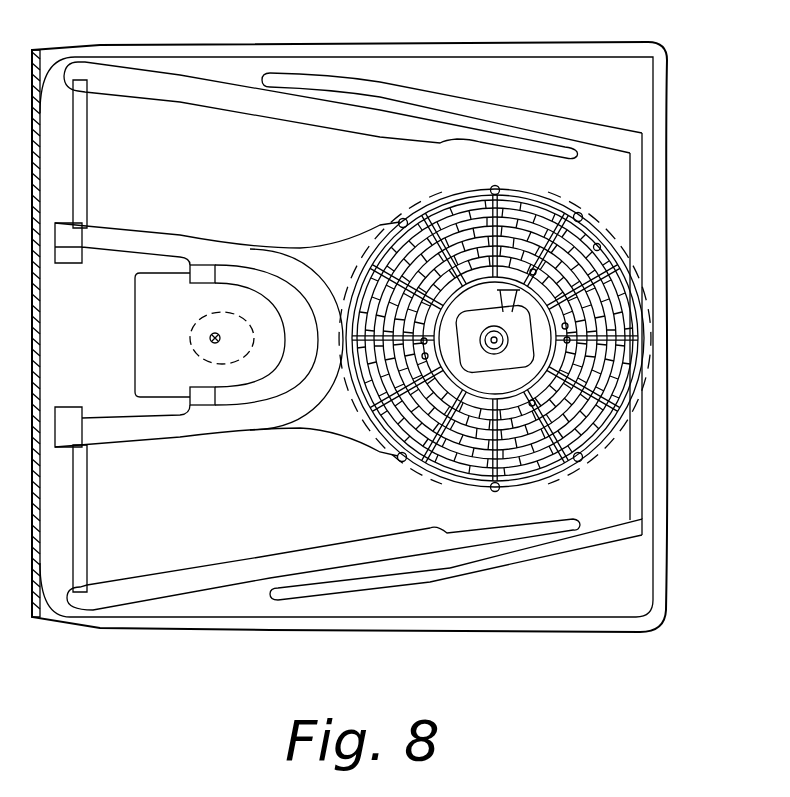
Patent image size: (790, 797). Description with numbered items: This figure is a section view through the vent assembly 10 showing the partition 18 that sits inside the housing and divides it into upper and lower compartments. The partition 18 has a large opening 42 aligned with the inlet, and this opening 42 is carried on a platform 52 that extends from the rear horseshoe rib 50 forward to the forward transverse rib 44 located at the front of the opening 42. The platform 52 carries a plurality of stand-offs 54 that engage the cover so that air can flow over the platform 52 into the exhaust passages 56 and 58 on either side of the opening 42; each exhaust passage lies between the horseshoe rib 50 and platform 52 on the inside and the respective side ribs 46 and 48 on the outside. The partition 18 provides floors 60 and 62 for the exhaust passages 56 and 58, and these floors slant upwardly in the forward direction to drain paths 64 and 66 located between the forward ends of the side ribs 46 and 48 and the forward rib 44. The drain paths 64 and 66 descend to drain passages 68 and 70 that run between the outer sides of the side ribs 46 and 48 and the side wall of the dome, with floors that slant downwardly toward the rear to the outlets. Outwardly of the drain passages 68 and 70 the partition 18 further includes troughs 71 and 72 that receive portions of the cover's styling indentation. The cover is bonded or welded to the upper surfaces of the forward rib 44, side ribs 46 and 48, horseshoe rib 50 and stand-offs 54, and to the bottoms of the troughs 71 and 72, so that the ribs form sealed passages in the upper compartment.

The vent assembly 10 is at (694, 132).
The partition 18 is at (640, 575).
The opening 42 is at (600, 247).
The forward transverse rib 44 is at (635, 468).
The side rib 46 is at (248, 575).
The side rib 48 is at (375, 128).
The rear horseshoe rib 50 is at (198, 247).
The platform 52 is at (440, 200).
The stand-offs 54 is at (501, 186).
The exhaust passage 56 is at (165, 557).
The exhaust passage 58 is at (147, 123).
The floor 60 is at (232, 506).
The floor 62 is at (270, 176).
The drain path 64 is at (598, 522).
The drain path 66 is at (600, 158).
The drain passage 68 is at (348, 577).
The drain passage 70 is at (387, 100).
The trough 71 is at (537, 557).
The trough 72 is at (475, 100).